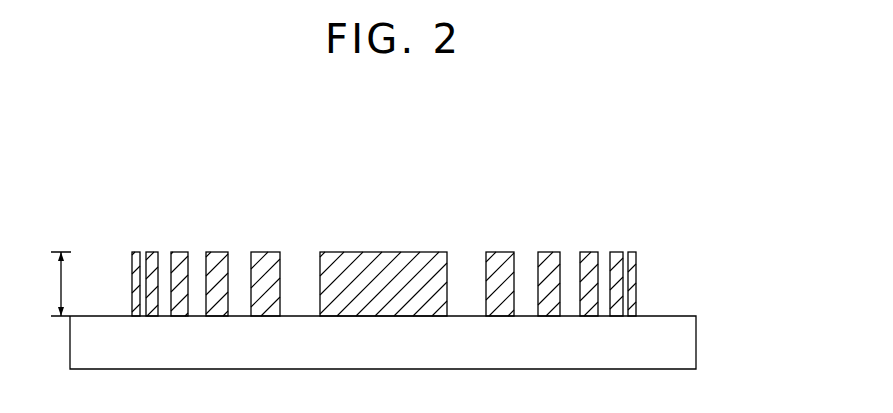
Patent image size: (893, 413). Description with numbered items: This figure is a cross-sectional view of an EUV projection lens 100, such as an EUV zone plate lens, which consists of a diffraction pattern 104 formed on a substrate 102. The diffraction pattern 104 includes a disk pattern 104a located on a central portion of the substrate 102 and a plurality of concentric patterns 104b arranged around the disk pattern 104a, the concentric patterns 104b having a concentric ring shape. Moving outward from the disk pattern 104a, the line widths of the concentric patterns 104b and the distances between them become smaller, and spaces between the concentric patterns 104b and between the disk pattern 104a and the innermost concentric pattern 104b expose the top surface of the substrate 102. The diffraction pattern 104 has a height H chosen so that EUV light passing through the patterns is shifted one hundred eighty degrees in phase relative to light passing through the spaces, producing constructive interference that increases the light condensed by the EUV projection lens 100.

The EUV projection lens 100 is at (651, 214).
The substrate 102 is at (694, 328).
The diffraction pattern 104 is at (413, 185).
The disk pattern 104a is at (382, 252).
The concentric patterns 104b is at (263, 252).
The height H is at (55, 284).